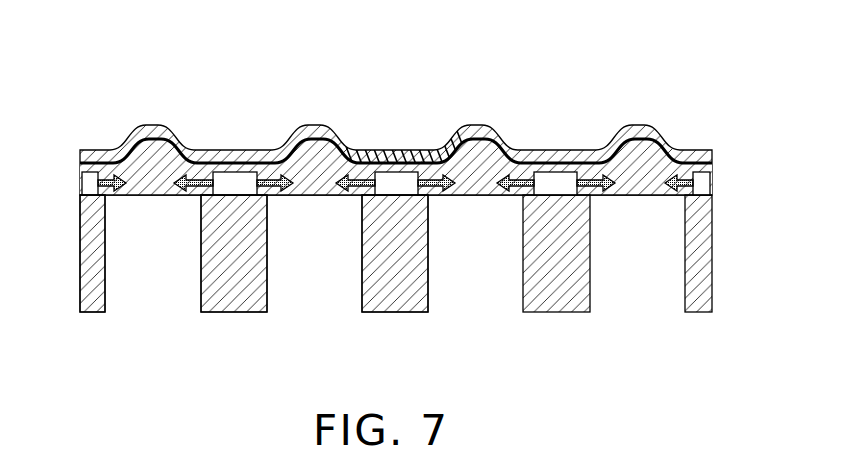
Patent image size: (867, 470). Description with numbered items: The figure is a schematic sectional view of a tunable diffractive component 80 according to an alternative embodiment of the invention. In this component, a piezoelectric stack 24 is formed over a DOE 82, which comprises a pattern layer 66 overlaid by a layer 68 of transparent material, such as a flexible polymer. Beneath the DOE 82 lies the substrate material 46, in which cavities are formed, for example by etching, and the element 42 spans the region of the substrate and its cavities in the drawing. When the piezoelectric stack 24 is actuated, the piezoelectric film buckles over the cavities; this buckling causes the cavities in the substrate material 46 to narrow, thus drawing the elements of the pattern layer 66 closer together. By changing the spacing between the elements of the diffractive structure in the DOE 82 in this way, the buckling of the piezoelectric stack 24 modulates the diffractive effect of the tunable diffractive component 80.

The tunable diffractive component 80 is at (108, 80).
The piezoelectric stack 24 is at (686, 158).
The layer of transparent material 68 is at (80, 165).
The pattern layer 66 is at (83, 190).
The DOE 82 is at (727, 163).
The substrate 42 is at (727, 197).
The substrate material 46 is at (380, 301).